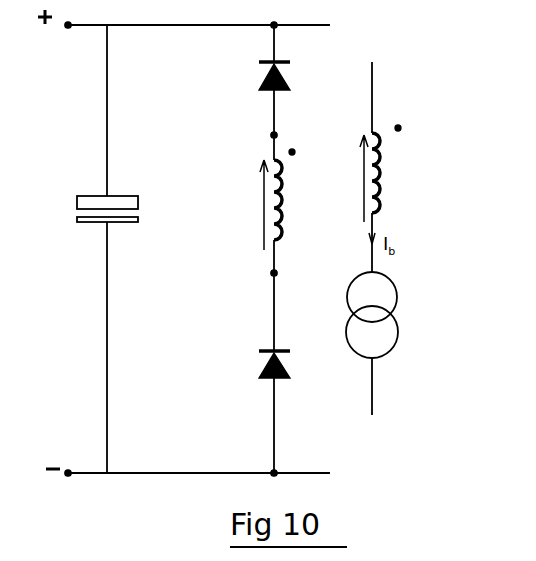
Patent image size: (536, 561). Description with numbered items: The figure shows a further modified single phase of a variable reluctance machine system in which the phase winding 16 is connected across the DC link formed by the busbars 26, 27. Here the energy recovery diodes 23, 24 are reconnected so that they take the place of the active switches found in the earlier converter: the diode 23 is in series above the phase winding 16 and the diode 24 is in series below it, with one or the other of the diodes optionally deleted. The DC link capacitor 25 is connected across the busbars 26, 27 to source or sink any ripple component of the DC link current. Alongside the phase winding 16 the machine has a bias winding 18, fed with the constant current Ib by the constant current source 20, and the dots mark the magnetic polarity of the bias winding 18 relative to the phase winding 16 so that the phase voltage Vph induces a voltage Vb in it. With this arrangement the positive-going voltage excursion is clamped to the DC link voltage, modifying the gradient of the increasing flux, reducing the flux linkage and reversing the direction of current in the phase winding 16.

The phase winding 16 is at (292, 180).
The bias winding 18 is at (392, 160).
The constant current source 20 is at (393, 285).
The energy recovery diode 23 is at (258, 62).
The energy recovery diode 24 is at (260, 362).
The DC link capacitor 25 is at (72, 210).
The busbar 26 is at (155, 28).
The busbar 27 is at (120, 476).